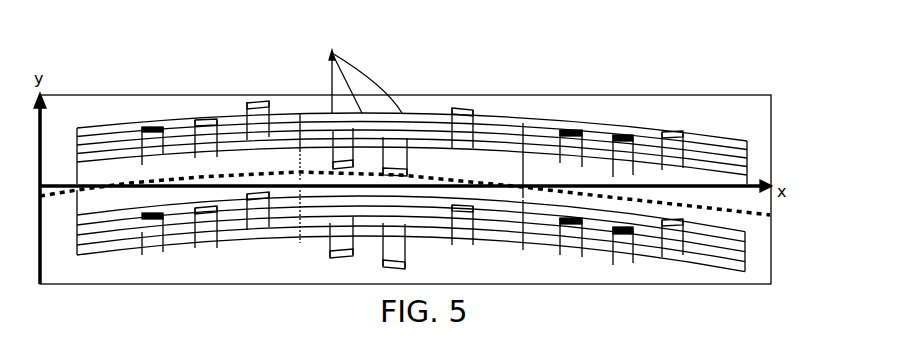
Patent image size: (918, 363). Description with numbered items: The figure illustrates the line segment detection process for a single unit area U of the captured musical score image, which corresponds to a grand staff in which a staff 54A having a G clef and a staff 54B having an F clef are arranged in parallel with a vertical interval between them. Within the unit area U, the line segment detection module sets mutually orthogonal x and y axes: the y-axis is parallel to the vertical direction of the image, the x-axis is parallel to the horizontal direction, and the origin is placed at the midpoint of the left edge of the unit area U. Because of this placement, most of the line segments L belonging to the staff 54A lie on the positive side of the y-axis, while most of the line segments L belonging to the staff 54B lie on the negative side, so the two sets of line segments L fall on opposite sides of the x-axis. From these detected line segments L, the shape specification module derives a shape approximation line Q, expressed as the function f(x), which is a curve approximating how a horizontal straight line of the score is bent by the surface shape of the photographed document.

The unit area U is at (771, 120).
The staff having a G clef 54A is at (795, 147).
The staff having an F clef 54B is at (795, 237).
The line segment L is at (364, 71).
The shape approximation line Q is at (486, 186).